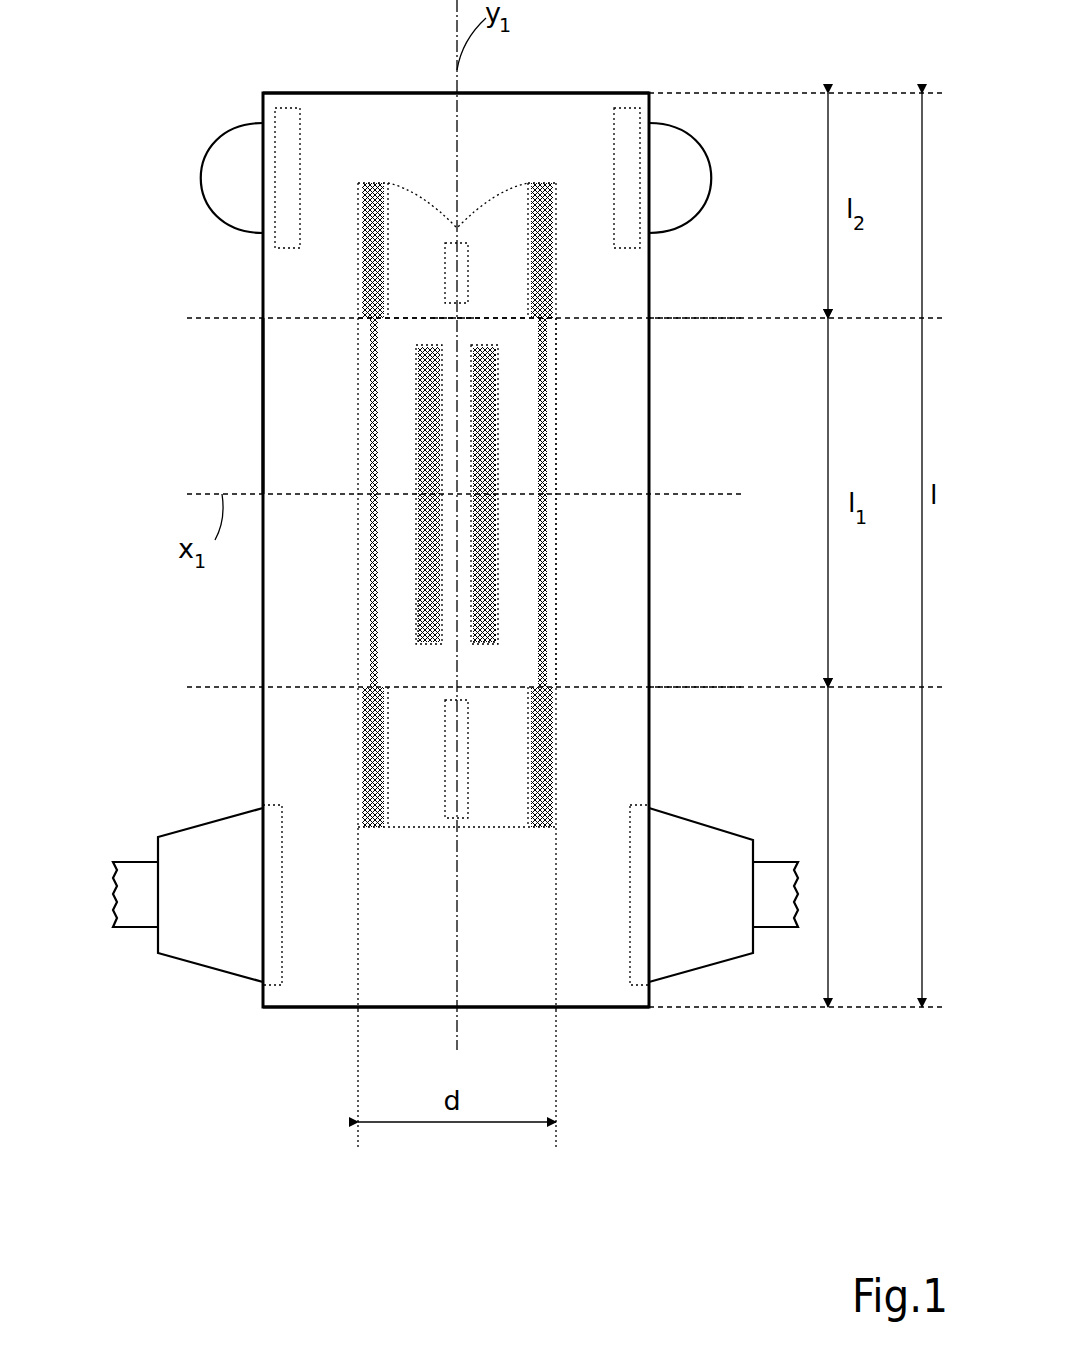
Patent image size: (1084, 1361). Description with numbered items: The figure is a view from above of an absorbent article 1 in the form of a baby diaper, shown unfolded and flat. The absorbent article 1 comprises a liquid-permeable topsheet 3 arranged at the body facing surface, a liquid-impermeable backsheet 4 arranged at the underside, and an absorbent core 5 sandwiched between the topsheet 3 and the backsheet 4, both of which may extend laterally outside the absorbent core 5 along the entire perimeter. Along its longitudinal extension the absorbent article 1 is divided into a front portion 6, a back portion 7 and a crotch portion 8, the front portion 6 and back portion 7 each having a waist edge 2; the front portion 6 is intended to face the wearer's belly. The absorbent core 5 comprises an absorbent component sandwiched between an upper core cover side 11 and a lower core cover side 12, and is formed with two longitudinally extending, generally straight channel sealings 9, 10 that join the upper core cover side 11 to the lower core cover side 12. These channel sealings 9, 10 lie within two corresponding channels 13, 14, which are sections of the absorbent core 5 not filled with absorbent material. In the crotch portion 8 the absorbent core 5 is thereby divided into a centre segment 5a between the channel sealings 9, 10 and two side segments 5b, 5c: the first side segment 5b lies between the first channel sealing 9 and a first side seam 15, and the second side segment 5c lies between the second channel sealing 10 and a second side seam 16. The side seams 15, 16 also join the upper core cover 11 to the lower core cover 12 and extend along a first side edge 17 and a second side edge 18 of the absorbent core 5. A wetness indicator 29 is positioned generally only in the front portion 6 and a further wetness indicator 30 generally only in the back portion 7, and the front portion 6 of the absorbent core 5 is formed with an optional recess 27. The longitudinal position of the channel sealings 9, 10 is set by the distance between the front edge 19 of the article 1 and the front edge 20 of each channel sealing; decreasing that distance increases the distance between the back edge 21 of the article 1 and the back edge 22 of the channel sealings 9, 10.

The absorbent article 1 is at (715, 72).
The waist edge 2 is at (597, 93).
The topsheet 3 is at (285, 338).
The backsheet 4 is at (287, 372).
The absorbent core 5 is at (358, 196).
The centre segment 5a is at (465, 555).
The first side segment 5b is at (402, 553).
The second side segment 5c is at (512, 598).
The front portion 6 is at (180, 143).
The back portion 7 is at (150, 793).
The crotch portion 8 is at (137, 488).
The first channel sealing 9 is at (418, 613).
The second channel sealing 10 is at (498, 617).
The upper core cover side 11 is at (543, 337).
The lower core cover side 12 is at (598, 340).
The first channel 13 is at (420, 582).
The second channel 14 is at (545, 457).
The first side seam 15 is at (372, 425).
The second side seam 16 is at (547, 385).
The first side edge 17 is at (360, 748).
The second side edge 18 is at (556, 738).
The front edge 19 is at (318, 93).
The front edge of channel sealing 20 is at (433, 318).
The back edge 21 is at (300, 1010).
The back edge of channel sealing 22 is at (487, 643).
The recess 27 is at (360, 212).
The wetness indicator 29 is at (468, 260).
The further wetness indicator 30 is at (445, 755).